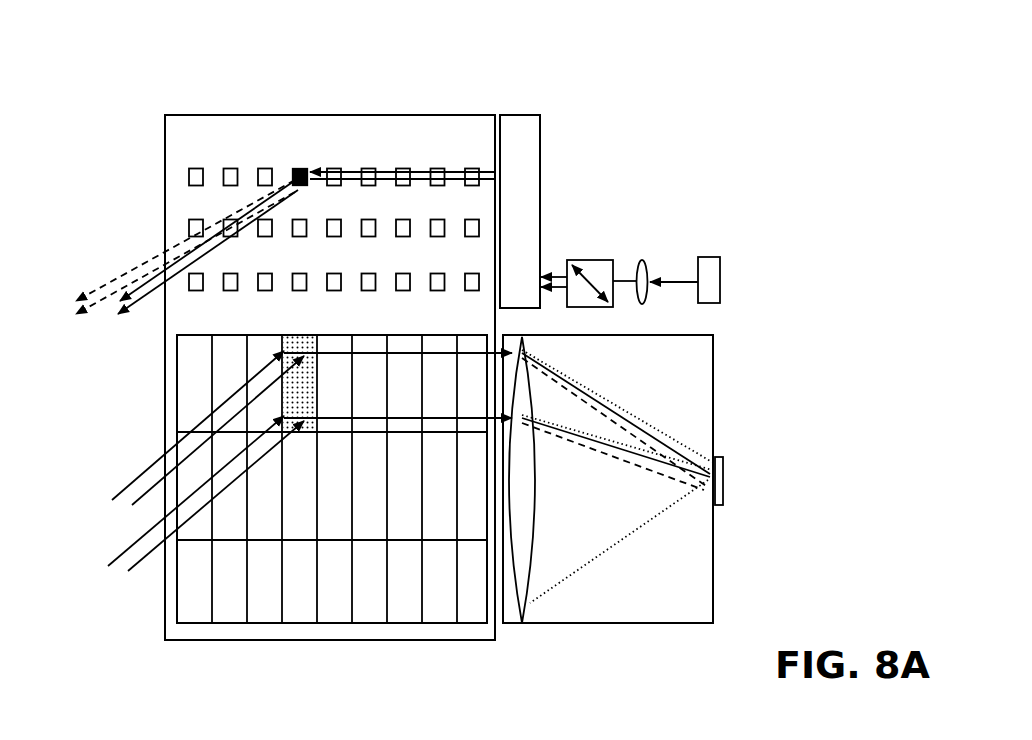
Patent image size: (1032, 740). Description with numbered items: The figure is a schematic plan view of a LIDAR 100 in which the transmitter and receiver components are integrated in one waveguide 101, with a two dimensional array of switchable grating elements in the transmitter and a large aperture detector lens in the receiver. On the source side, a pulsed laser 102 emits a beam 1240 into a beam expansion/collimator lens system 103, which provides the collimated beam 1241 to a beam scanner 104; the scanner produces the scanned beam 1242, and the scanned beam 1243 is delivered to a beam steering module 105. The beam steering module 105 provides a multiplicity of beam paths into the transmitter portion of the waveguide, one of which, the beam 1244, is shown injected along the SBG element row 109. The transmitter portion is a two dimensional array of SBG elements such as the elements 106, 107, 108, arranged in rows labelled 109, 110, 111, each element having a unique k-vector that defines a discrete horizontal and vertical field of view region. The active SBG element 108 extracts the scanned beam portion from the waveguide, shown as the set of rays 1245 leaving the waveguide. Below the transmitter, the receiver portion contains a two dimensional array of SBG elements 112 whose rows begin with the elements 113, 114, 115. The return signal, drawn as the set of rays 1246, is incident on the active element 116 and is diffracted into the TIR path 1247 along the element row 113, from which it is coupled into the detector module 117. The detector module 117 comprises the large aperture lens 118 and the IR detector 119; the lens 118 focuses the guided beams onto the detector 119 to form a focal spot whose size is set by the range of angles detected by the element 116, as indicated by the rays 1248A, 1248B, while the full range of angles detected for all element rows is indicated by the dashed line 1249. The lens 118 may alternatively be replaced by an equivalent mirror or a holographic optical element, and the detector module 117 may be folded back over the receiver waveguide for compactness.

The LIDAR 100 is at (692, 78).
The waveguide 101 is at (198, 84).
The pulsed laser 102 is at (723, 282).
The beam expansion/collimator lens system 103 is at (647, 263).
The beam scanner 104 is at (610, 308).
The beam steering module 105 is at (542, 178).
The SBG element 106 is at (195, 163).
The SBG element 107 is at (478, 163).
The active SBG element 108 is at (298, 170).
The SBG element row 109 is at (187, 170).
The SBG element row 110 is at (187, 225).
The SBG element row 111 is at (186, 284).
The two dimensional array of SBG elements 112 is at (165, 640).
The element row 113 is at (177, 413).
The element 114 is at (177, 492).
The element 115 is at (175, 583).
The active element 116 is at (269, 518).
The detector module 117 is at (713, 597).
The large aperture lens 118 is at (522, 623).
The IR detector 119 is at (725, 497).
The beam 1240 is at (686, 277).
The beam 1241 is at (616, 279).
The scanned beam 1242 is at (605, 277).
The scanned beam 1243 is at (545, 278).
The beam 1244 is at (386, 167).
The set of rays 1245 is at (113, 277).
The set of rays 1246 is at (120, 570).
The TIR path 1247 is at (330, 518).
The dashed line ray 1248A is at (653, 447).
The dashed line ray 1248B is at (685, 448).
The dashed lines 1249 is at (598, 553).